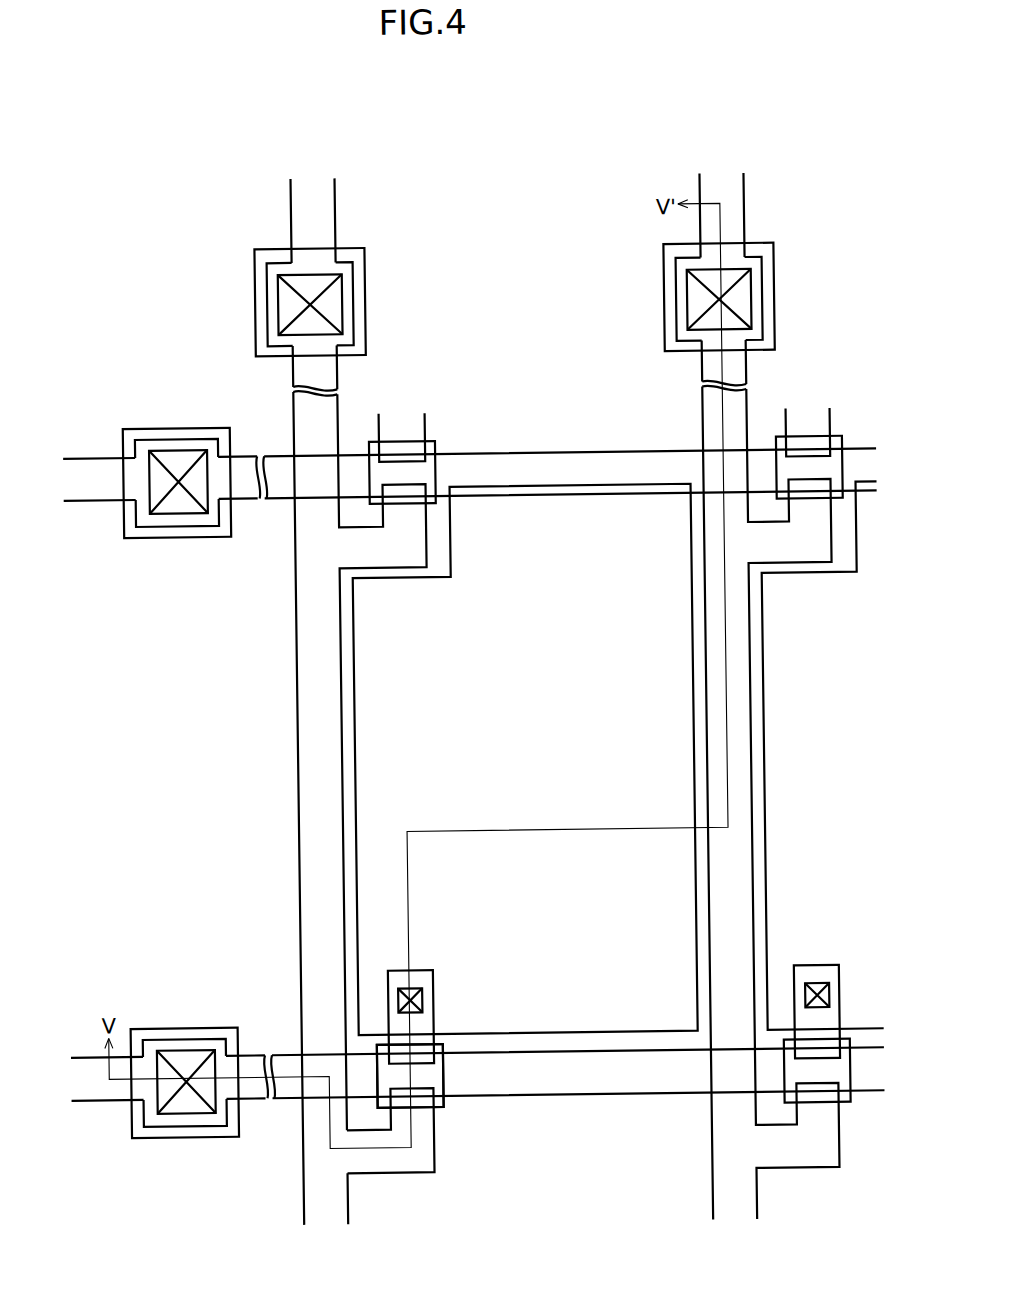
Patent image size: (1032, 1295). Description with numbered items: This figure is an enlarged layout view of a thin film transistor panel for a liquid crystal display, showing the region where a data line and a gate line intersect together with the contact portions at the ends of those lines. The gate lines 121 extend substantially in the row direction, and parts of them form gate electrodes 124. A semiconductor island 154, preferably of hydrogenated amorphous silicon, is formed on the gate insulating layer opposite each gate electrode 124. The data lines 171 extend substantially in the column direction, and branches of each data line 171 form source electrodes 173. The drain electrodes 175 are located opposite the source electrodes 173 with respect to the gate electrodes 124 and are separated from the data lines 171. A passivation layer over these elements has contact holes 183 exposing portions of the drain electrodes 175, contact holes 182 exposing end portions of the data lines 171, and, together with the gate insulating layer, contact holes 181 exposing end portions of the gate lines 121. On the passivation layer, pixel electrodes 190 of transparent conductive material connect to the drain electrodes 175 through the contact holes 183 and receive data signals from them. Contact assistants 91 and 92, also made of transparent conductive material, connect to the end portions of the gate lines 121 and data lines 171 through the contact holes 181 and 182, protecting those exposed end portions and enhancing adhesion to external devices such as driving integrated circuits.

The contact assistant 91 is at (233, 1129).
The contact assistant 92 is at (778, 337).
The gate line 121 is at (627, 1099).
The gate electrode 124 is at (414, 1081).
The semiconductor island 154 is at (443, 1077).
The data line 171 is at (297, 818).
The source electrode 173 is at (386, 1173).
The drain electrode 175 is at (430, 1009).
The contact hole 181 is at (193, 1111).
The contact hole 182 is at (758, 304).
The contact hole 183 is at (416, 999).
The pixel electrode 190 is at (692, 737).